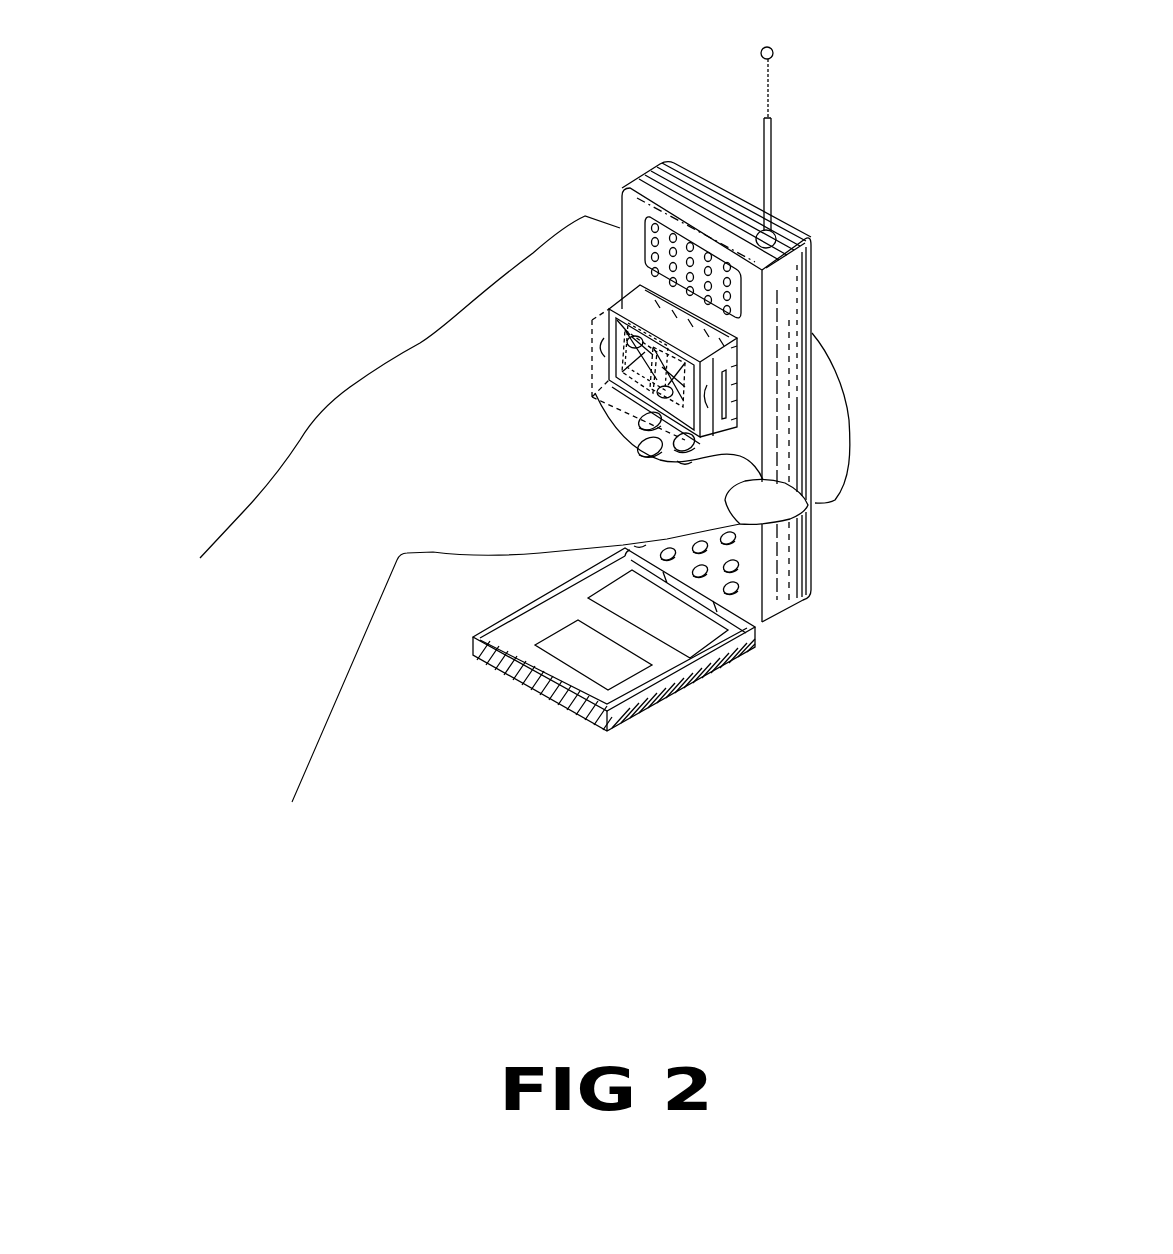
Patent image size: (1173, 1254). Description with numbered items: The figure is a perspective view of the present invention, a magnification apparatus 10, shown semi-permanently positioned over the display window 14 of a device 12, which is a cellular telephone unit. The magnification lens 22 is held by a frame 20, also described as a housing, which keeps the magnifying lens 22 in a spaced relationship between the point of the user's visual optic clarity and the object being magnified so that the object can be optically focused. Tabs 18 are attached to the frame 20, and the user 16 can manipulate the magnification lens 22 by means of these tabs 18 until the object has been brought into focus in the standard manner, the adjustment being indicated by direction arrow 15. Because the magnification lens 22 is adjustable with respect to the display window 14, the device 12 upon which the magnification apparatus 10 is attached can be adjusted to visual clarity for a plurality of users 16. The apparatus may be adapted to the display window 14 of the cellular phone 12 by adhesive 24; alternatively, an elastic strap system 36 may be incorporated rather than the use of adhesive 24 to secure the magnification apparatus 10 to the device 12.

The magnification apparatus 10 is at (558, 332).
The device 12 is at (798, 273).
The display window 14 is at (740, 362).
The direction arrow 15 is at (608, 292).
The user 16 is at (298, 702).
The tabs 18 is at (702, 392).
The frame 20 is at (590, 357).
The magnification lens 22 is at (663, 362).
The adhesive 24 is at (654, 300).
The elastic strap system 36 is at (733, 393).